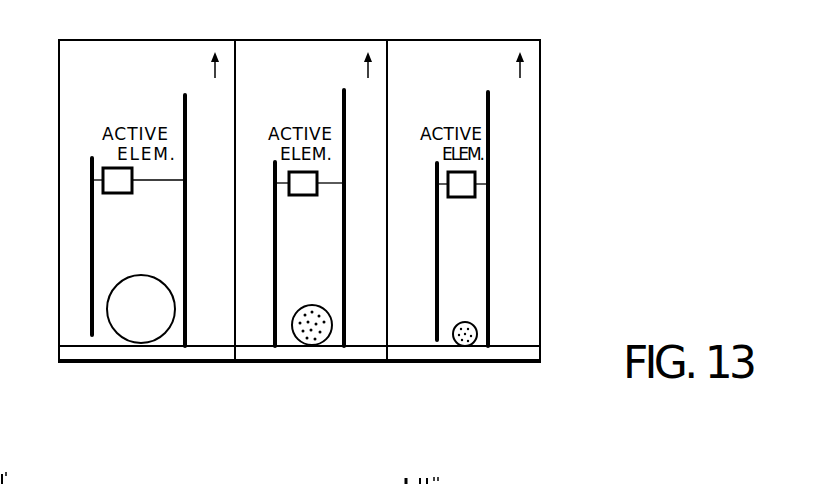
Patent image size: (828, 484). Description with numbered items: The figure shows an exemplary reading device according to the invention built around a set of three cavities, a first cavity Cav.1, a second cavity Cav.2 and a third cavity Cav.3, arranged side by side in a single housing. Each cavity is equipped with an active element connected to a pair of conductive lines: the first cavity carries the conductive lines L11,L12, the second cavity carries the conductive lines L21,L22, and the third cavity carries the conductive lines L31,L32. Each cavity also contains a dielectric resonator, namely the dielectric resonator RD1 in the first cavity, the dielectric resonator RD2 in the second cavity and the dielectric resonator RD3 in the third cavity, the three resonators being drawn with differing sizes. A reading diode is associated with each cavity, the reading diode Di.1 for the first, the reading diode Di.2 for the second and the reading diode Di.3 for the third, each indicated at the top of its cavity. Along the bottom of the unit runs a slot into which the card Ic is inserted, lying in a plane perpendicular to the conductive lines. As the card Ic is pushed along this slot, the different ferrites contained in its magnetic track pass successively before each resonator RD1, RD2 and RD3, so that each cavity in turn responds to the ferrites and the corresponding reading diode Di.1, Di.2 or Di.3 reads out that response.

The card Ic is at (520, 356).
The first cavity Cav.1 is at (87, 58).
The second cavity Cav.2 is at (263, 58).
The third cavity Cav.3 is at (415, 58).
The reading diode Di.1 is at (206, 45).
The reading diode Di.2 is at (361, 45).
The reading diode Di.3 is at (517, 45).
The conductive lines L11,L12 is at (185, 348).
The conductive lines L21,L22 is at (344, 348).
The conductive lines L31,L32 is at (488, 348).
The dielectric resonator RD1 is at (141, 296).
The dielectric resonator RD2 is at (306, 310).
The dielectric resonator RD3 is at (461, 321).